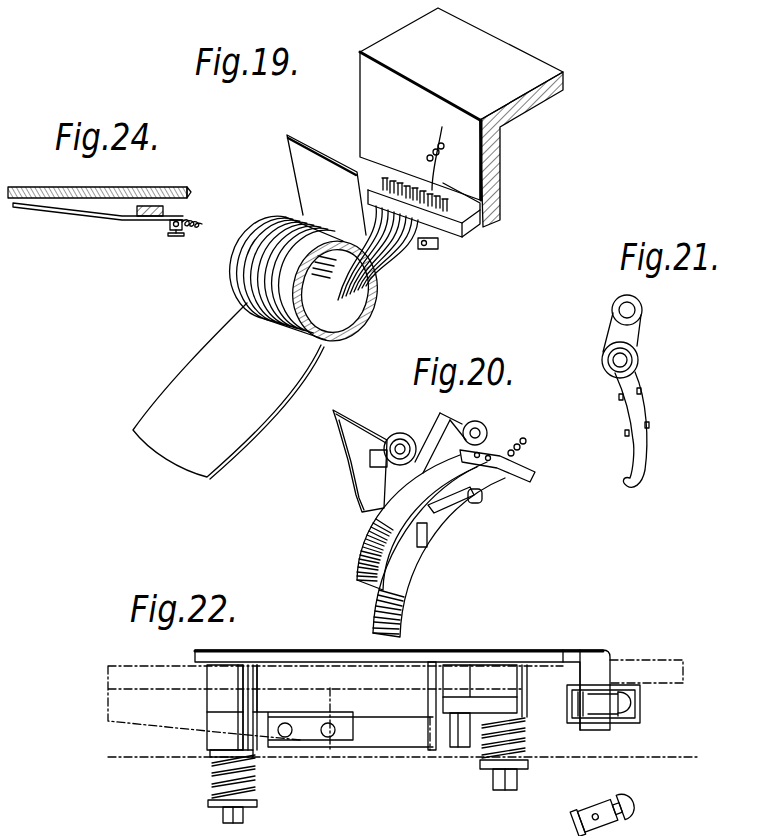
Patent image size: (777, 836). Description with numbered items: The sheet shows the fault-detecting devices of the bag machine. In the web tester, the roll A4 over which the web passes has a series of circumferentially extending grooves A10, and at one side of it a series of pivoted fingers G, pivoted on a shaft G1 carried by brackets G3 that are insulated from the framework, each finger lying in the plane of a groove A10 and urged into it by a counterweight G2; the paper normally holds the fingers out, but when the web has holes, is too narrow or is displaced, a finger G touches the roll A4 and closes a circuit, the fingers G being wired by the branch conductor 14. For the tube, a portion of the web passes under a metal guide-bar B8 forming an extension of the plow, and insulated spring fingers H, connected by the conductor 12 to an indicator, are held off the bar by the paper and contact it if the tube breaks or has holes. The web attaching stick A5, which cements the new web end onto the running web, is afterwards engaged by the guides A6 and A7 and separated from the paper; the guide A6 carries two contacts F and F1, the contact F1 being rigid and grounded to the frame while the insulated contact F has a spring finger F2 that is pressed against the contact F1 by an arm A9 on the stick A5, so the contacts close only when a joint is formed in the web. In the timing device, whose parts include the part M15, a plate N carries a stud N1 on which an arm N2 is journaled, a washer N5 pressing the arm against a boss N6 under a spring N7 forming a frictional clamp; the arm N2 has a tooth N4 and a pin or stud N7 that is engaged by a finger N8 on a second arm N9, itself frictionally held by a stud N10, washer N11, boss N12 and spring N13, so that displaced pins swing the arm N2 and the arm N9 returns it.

In FIG. 19, the counterweight G2 is at (410, 184).
In FIG. 19, the branch conductor 14 is at (451, 158).
In FIG. 19, the brackets G3 is at (463, 227).
In FIG. 19, the shaft G1 is at (440, 244).
In FIG. 19, the pivoted fingers G is at (406, 275).
In FIG. 19, the circumferentially extending grooves A10 is at (233, 277).
In FIG. 19, the roll A4 is at (340, 322).
In FIG. 24, the metal guide-bar B8 is at (48, 187).
In FIG. 24, the spring fingers H is at (114, 217).
In FIG. 24, the conductor 12 is at (201, 226).
In FIG. 20, the stick A5 is at (353, 447).
In FIG. 21, the stick A5 is at (648, 450).
In FIG. 20, the guide A6 is at (377, 541).
In FIG. 20, the guide A7 is at (417, 564).
In FIG. 20, the arm A9 is at (492, 472).
In FIG. 21, the arm A9 is at (641, 367).
In FIG. 20, the contact F is at (498, 469).
In FIG. 20, the contact F1 is at (478, 497).
In FIG. 20, the spring finger F2 is at (468, 523).
In FIG. 22, the plate N is at (407, 650).
In FIG. 22, the boss N6 is at (527, 663).
In FIG. 22, the boss N12 is at (213, 683).
In FIG. 22, the finger N8 is at (380, 749).
In FIG. 22, the arm N9 is at (263, 748).
In FIG. 22, the timing mechanism part M15 is at (260, 712).
In FIG. 22, the washer N11 is at (207, 753).
In FIG. 22, the stud N10 is at (230, 783).
In FIG. 22, the spring N13 is at (253, 788).
In FIG. 22, the arm N2 is at (467, 708).
In FIG. 22, the spring N7 is at (453, 728).
In FIG. 22, the washer N5 is at (527, 719).
In FIG. 22, the stud N1 is at (513, 790).
In FIG. 22, the tooth N4 is at (595, 813).